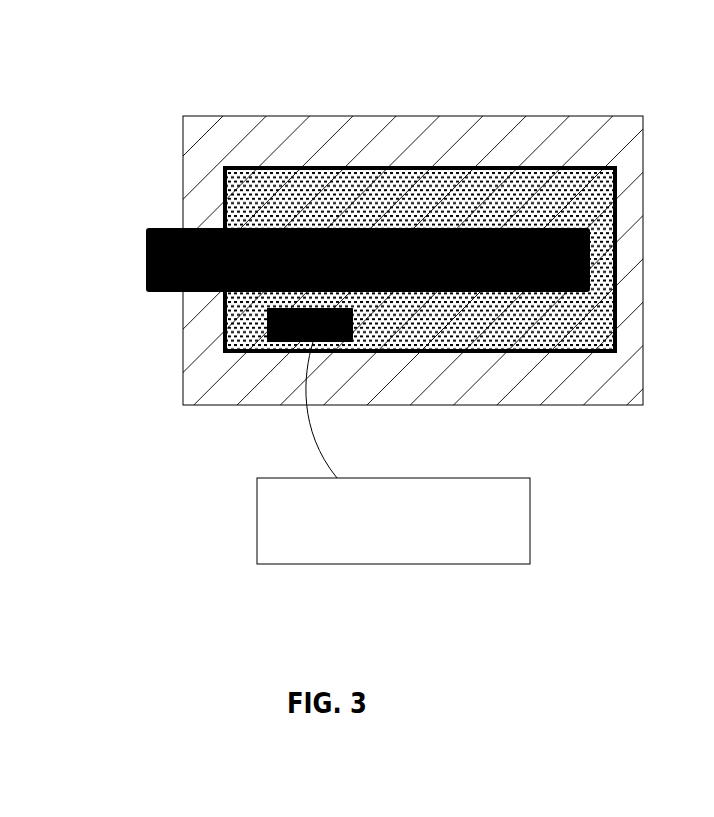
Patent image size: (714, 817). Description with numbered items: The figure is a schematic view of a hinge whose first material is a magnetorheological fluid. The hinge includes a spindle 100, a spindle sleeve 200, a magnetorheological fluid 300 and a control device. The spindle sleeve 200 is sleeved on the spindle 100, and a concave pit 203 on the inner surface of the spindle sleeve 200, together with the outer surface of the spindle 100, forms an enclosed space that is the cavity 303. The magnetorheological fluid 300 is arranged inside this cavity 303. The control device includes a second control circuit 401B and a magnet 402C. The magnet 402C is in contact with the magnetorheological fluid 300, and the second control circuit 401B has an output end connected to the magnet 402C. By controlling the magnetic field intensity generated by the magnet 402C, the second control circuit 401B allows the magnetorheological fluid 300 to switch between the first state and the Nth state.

The spindle 100 is at (152, 228).
The spindle sleeve 200 is at (222, 116).
The concave pit 203 is at (325, 167).
The magnetorheological fluid 300 is at (416, 177).
The cavity 303 is at (413, 180).
The second control circuit 401B is at (385, 564).
The magnet 402C is at (243, 355).